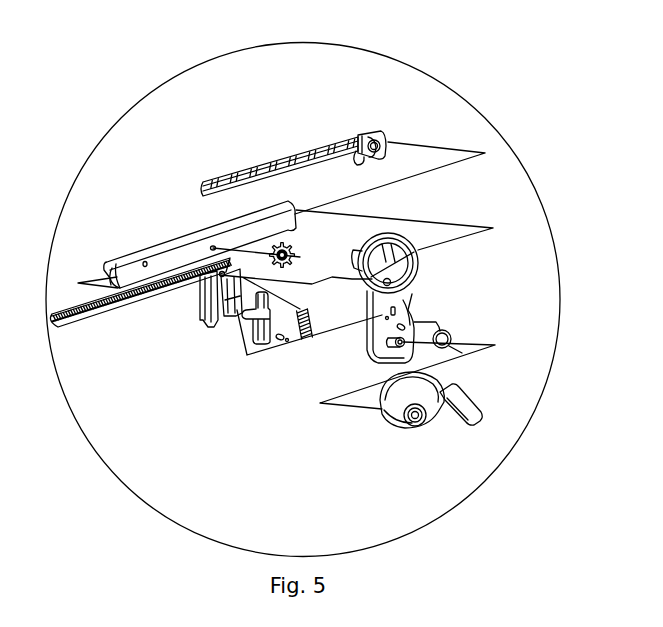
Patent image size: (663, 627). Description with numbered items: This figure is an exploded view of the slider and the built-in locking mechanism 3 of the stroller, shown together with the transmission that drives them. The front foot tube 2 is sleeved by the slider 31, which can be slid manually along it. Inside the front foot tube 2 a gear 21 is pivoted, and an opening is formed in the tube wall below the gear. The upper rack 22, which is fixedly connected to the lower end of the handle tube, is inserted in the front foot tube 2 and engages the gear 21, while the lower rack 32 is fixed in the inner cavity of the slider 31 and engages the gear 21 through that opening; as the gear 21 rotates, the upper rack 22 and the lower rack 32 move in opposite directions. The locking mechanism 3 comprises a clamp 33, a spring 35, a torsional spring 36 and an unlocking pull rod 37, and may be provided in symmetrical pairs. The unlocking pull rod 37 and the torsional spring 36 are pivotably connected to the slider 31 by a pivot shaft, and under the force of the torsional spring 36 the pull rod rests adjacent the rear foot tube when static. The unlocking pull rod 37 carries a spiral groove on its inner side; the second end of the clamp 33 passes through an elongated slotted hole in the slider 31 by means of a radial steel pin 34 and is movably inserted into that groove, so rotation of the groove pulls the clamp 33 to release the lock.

The front foot tube 2 is at (183, 243).
The locking mechanism 3 is at (396, 59).
The gear 21 is at (274, 246).
The upper rack 22 is at (312, 150).
The slider 31 is at (410, 240).
The lower rack 32 is at (207, 303).
The clamp 33 is at (257, 326).
The pin 34 is at (277, 337).
The spring 35 is at (306, 336).
The torsional spring 36 is at (450, 333).
The unlocking pull rod 37 is at (474, 406).